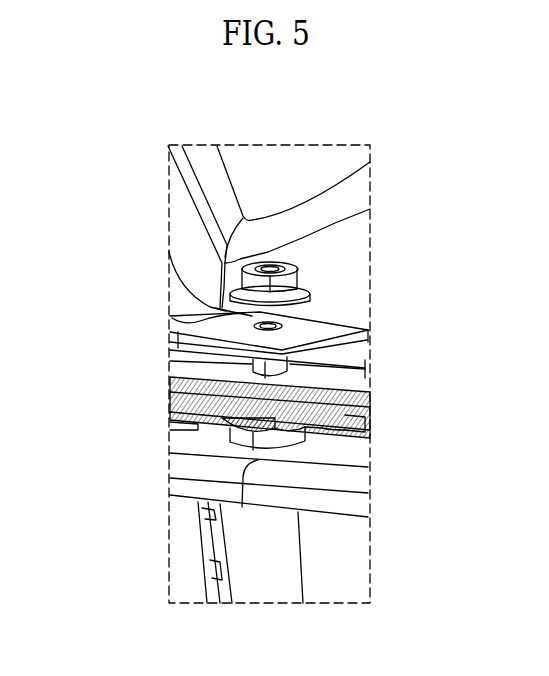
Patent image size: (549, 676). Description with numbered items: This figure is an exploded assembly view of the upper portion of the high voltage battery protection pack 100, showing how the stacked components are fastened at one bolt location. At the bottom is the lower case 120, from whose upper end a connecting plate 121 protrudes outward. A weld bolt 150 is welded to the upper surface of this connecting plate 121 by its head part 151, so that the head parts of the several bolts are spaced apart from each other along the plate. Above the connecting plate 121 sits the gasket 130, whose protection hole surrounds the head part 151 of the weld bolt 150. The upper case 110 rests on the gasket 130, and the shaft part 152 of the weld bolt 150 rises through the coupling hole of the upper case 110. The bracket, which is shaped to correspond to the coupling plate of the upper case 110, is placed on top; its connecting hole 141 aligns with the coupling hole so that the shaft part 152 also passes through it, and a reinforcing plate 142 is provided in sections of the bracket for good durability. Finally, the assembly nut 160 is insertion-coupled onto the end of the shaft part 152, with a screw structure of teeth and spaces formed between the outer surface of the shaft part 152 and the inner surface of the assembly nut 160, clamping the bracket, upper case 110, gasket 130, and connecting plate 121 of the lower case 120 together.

The high voltage battery protection pack 100 is at (297, 115).
The upper case 110 is at (180, 360).
The lower case 120 is at (357, 490).
The connecting plate 121 is at (348, 462).
The gasket 130 is at (178, 405).
The connecting hole 141 is at (172, 318).
The reinforcing plate 142 is at (302, 332).
The weld bolt 150 is at (216, 437).
The head part 151 is at (365, 436).
The shaft part 152 is at (292, 362).
The assembly nut 160 is at (247, 283).